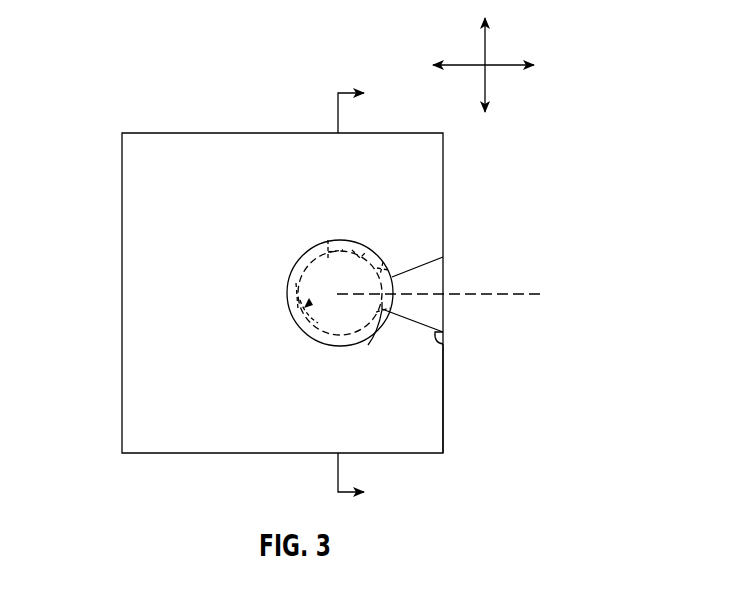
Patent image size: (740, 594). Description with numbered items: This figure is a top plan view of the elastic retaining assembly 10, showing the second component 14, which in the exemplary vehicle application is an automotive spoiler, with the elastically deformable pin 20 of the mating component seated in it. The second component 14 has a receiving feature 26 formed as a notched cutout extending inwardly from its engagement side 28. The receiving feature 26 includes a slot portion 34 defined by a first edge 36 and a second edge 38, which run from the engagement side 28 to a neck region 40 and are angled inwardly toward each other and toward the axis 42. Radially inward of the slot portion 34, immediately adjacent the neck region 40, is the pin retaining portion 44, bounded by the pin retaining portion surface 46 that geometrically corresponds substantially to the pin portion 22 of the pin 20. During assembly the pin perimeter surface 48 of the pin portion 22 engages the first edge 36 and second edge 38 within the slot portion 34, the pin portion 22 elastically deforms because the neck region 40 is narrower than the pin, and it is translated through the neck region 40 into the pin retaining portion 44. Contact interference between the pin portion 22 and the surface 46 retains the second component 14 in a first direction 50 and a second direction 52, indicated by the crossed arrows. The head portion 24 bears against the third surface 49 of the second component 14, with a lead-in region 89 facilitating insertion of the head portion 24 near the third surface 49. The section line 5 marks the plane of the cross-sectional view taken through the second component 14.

The elastic retaining assembly 10 is at (112, 60).
The second component 14 is at (182, 163).
The section line 5- 5 is at (362, 295).
The first direction 50 is at (486, 31).
The second direction 52 is at (460, 64).
The elastically deformable pin 20 is at (286, 305).
The pin portion 22 is at (300, 255).
The pin retaining portion 44 is at (300, 290).
The head portion 24 is at (292, 322).
The pin perimeter surface 48 is at (330, 240).
The pin retaining portion surface 46 is at (368, 252).
The first edge 36 is at (441, 268).
The second edge 38 is at (430, 326).
The neck region 40 is at (370, 339).
The receiving feature 26 is at (424, 254).
The slot portion 34 is at (444, 283).
The axis 42 is at (537, 292).
The lead-in region 89 is at (447, 347).
The engagement side 28 is at (445, 395).
The third surface 49 is at (423, 418).